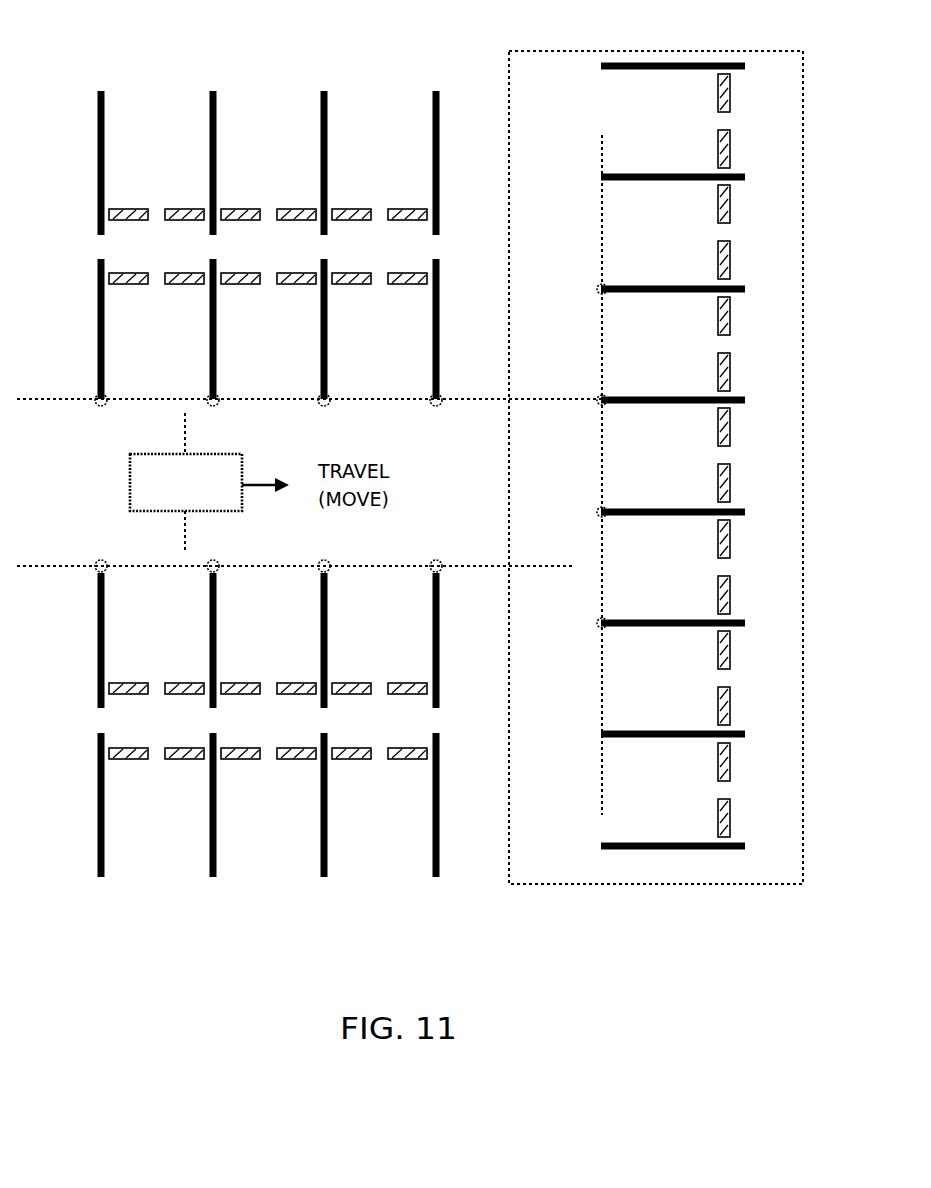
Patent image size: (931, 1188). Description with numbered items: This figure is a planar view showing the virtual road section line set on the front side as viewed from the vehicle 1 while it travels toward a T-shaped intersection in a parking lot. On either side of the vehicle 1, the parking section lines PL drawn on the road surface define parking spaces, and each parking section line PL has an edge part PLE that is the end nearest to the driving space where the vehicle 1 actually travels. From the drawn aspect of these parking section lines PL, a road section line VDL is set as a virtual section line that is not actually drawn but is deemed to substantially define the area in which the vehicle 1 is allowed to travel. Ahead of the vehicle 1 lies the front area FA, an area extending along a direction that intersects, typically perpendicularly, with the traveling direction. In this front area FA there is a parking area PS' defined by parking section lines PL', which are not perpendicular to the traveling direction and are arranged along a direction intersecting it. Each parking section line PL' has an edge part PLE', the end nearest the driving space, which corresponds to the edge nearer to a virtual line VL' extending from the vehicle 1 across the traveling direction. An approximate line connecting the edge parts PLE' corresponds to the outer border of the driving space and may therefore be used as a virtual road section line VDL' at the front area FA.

The parking section line PL is at (253, 484).
The road section line VDL is at (309, 440).
The edge part PLE is at (233, 514).
The virtual line VL' is at (241, 483).
The vehicle 1 is at (209, 482).
The front area FA is at (687, 885).
The parking area PS' is at (672, 51).
The parking section line PL' is at (689, 460).
The virtual road section line VDL' is at (561, 465).
The edge part PLE' is at (563, 439).